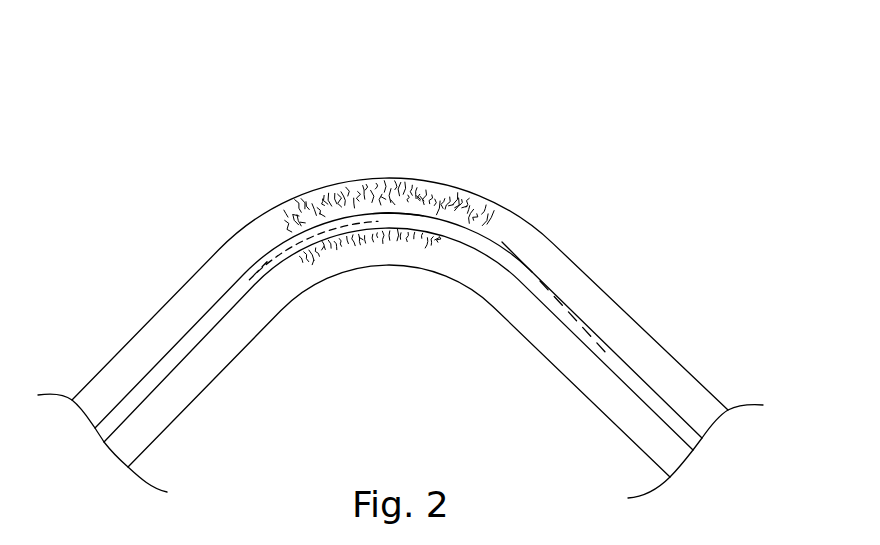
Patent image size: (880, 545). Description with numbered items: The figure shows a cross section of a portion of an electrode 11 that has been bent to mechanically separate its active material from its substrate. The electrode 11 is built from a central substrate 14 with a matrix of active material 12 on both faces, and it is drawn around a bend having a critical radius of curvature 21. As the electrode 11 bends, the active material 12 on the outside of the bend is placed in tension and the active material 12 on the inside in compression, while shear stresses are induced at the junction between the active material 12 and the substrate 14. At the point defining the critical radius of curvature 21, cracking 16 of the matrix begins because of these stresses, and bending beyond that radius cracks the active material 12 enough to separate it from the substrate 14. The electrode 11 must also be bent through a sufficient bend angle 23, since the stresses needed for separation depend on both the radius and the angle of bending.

The electrode 11 is at (620, 192).
The active material 12 is at (668, 377).
The substrate 14 is at (687, 422).
The cracking 16 is at (318, 200).
The critical radius of curvature 21 is at (322, 238).
The bend angle 23 is at (362, 167).